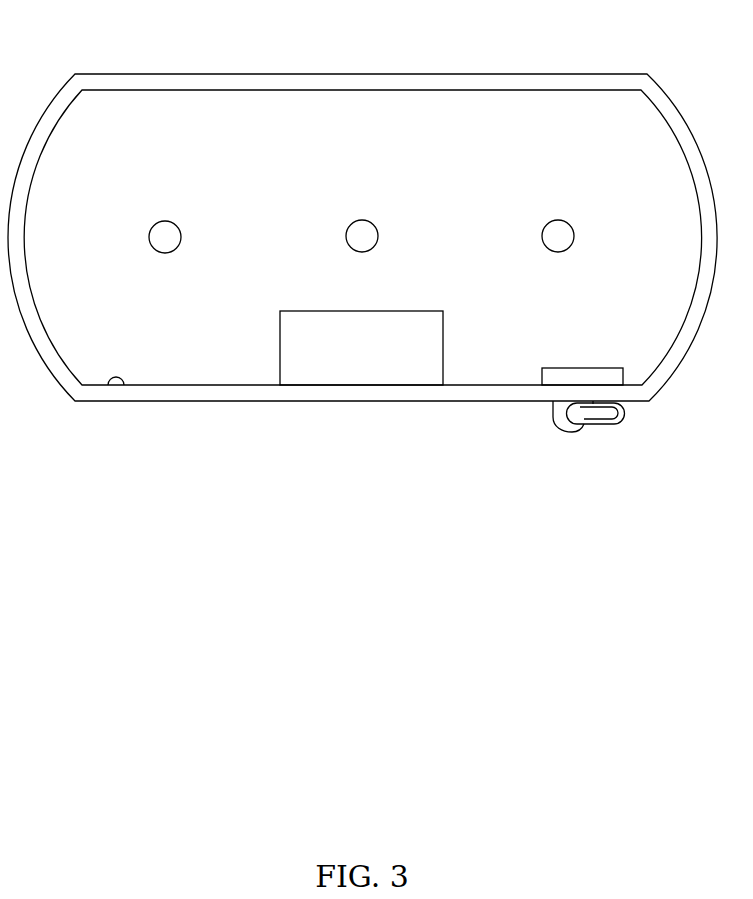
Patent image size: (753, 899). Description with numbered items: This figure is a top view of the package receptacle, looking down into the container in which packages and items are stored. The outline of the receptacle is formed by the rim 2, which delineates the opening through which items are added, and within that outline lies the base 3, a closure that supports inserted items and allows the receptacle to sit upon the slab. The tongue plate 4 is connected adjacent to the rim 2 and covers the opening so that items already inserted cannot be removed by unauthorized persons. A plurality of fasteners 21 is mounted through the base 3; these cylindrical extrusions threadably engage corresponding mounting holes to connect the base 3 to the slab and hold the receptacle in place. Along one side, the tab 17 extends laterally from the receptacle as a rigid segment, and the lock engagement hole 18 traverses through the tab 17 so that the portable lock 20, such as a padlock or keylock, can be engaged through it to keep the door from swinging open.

The rim 2 is at (636, 78).
The base 3 is at (198, 318).
The tongue plate 4 is at (354, 359).
The tab 17 is at (582, 425).
The lock engagement hole 18 is at (555, 419).
The portable lock 20 is at (627, 413).
The plurality of fasteners 21 is at (165, 233).